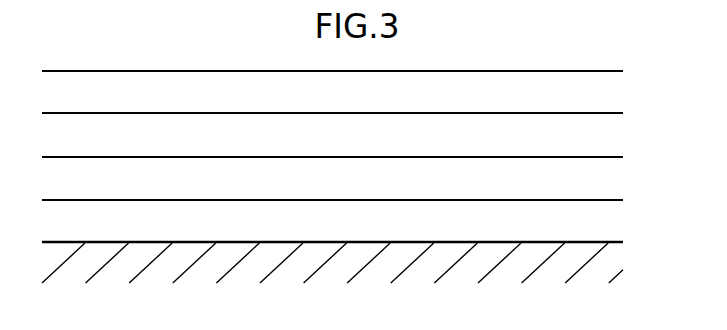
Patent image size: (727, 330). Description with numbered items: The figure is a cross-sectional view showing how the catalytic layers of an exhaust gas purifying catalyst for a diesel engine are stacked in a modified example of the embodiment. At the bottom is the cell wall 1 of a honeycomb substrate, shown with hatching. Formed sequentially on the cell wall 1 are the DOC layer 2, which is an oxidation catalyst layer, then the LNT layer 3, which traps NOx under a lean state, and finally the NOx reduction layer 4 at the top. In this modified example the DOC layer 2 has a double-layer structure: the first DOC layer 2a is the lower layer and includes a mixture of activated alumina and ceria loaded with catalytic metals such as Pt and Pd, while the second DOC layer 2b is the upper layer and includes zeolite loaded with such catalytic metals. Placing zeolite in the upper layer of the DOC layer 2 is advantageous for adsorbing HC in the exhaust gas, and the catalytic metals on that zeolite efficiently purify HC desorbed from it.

The cell wall 1 is at (603, 267).
The DOC layer 2 is at (381, 197).
The first DOC layer 2a is at (363, 220).
The second DOC layer 2b is at (603, 176).
The LNT layer 3 is at (603, 138).
The NOx reduction layer 4 is at (603, 95).